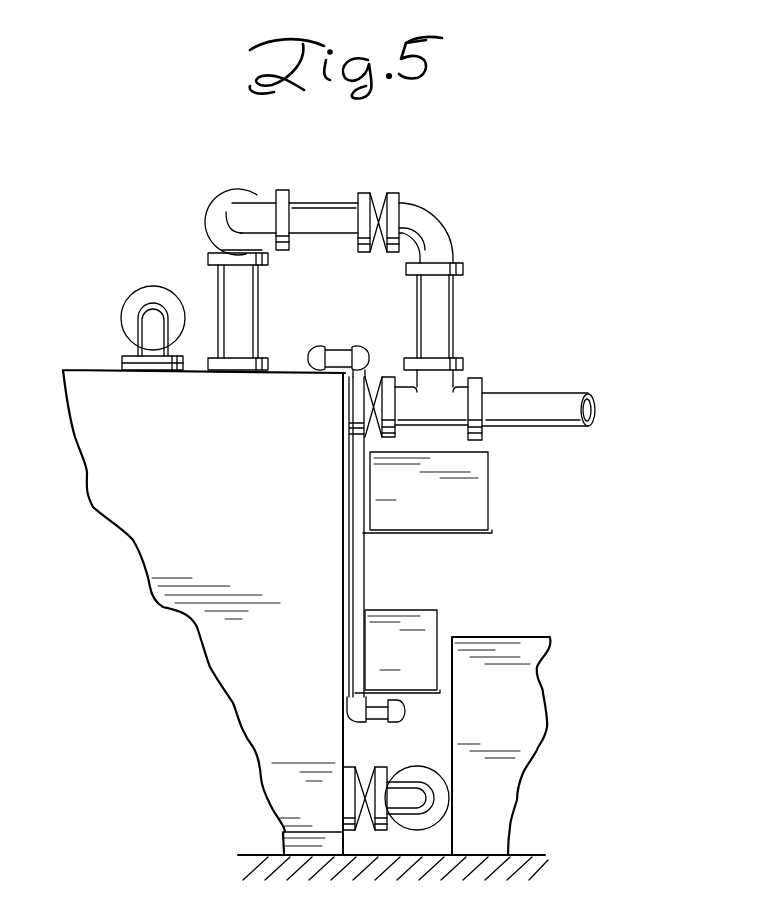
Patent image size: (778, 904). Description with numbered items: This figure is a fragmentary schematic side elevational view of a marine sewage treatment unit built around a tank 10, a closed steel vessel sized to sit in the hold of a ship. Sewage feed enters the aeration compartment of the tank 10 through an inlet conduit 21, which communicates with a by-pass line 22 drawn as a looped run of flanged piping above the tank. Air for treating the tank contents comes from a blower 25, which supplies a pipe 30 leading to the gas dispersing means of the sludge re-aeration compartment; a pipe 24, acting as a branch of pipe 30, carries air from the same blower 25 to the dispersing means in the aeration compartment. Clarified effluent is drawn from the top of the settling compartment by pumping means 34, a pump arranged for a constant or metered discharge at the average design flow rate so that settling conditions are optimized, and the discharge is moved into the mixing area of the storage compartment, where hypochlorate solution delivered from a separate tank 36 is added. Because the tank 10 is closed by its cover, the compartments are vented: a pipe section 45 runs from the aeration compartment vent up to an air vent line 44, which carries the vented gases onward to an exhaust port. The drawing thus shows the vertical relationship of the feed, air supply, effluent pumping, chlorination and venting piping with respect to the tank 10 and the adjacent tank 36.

The tank 10 is at (102, 460).
The inlet conduit 21 is at (542, 401).
The by-pass line 22 is at (331, 216).
The pipe 24 is at (345, 349).
The blower 25 is at (424, 634).
The pipe 30 is at (365, 584).
The pumping means 34 is at (478, 494).
The tank 36 is at (545, 640).
The air vent line 44 is at (130, 347).
The pipe section 45 is at (150, 314).